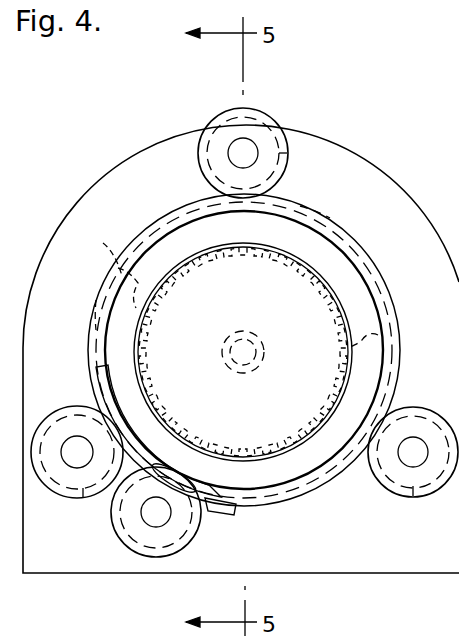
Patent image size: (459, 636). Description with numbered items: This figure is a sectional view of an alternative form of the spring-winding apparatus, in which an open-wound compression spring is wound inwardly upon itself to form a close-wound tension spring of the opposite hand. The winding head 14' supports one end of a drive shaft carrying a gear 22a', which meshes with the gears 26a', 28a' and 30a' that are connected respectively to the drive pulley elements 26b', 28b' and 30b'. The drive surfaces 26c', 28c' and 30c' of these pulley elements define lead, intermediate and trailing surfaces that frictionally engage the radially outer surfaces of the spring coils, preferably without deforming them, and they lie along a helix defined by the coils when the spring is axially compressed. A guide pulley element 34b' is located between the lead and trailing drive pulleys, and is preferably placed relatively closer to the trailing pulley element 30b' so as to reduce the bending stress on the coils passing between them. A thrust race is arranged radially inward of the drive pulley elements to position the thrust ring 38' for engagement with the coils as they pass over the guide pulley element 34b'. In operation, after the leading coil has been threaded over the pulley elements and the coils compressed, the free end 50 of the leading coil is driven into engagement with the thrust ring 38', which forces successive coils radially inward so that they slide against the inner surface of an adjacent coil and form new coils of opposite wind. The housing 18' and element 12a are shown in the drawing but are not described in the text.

The winding head 14' is at (241, 329).
The housing body 18' is at (241, 349).
The thrust ring 38' is at (265, 341).
The free end of the leading spring coil 50 is at (95, 382).
The tab 12a is at (252, 500).
The gear 22a' is at (99, 270).
The drive pulley element 28b' is at (259, 137).
The drive surface 28c' is at (336, 135).
The gear 28a' is at (332, 197).
The drive pulley element 30b' is at (413, 427).
The gear 30a' is at (393, 336).
The drive surface 30c' is at (425, 519).
The drive pulley element 26b' is at (75, 473).
The drive surface 26c' is at (55, 552).
The gear 26a' is at (71, 315).
The guide pulley element 34b' is at (144, 544).